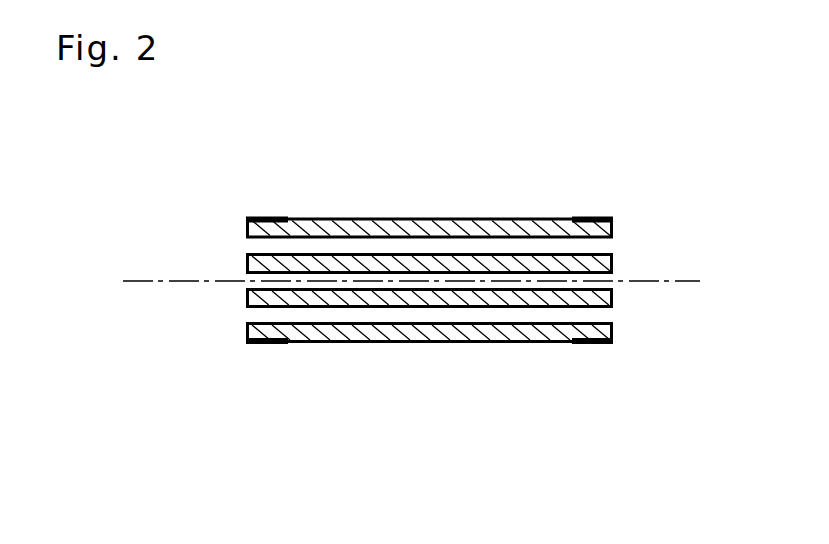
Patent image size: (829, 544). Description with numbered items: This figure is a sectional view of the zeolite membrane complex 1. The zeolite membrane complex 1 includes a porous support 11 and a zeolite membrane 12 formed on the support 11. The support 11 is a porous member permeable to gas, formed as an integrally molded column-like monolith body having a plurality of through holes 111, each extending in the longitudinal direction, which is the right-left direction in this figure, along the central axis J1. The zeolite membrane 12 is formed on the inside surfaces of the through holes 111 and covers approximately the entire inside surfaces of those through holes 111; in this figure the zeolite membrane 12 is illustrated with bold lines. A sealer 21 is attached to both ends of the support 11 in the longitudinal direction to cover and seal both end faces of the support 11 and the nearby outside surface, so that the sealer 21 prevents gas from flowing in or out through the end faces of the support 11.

The zeolite membrane complex 1 is at (192, 124).
The support 11 is at (372, 223).
The zeolite membrane 12 is at (603, 253).
The sealer 21 is at (272, 217).
The through hole 111 is at (238, 250).
The center axis J1 is at (140, 285).